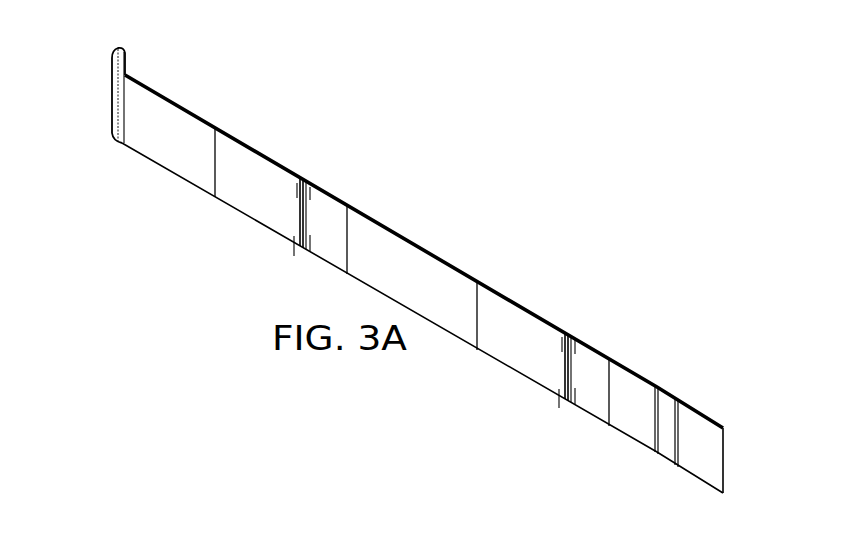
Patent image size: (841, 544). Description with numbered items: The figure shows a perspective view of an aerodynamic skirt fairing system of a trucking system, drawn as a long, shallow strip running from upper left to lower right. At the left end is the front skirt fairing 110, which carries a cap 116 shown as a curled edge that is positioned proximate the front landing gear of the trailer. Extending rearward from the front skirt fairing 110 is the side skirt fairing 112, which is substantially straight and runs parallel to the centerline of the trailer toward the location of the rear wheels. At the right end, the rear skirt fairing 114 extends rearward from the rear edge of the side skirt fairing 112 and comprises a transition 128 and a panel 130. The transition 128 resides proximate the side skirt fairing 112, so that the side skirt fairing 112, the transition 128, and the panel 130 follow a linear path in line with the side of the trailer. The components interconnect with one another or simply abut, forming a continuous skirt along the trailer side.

The front skirt fairing 110 is at (143, 76).
The side skirt fairing 112 is at (500, 282).
The rear skirt fairing 114 is at (697, 399).
The cap 116 is at (112, 93).
The transition 128 is at (670, 450).
The panel 130 is at (711, 481).